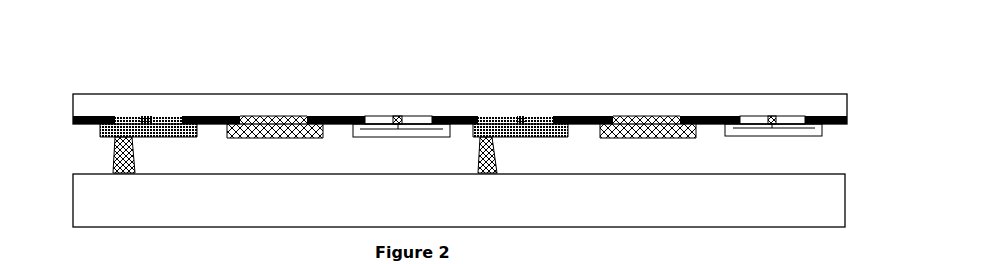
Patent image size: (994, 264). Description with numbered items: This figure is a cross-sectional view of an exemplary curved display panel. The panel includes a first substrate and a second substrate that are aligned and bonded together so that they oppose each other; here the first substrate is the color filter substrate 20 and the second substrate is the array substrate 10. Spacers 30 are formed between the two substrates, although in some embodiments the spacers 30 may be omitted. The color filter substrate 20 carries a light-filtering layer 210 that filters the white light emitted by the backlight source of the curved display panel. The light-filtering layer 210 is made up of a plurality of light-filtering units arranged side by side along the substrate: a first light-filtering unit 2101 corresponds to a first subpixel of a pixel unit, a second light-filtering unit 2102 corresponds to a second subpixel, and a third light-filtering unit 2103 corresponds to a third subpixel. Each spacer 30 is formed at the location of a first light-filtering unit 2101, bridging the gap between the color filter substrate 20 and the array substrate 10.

The array substrate 10 is at (115, 205).
The color filter substrate 20 is at (66, 123).
The spacer 30 is at (113, 153).
The light-filtering layer 210 is at (810, 32).
The first light-filtering unit 2101 is at (168, 116).
The second light-filtering unit 2102 is at (297, 116).
The third light-filtering unit 2103 is at (421, 116).